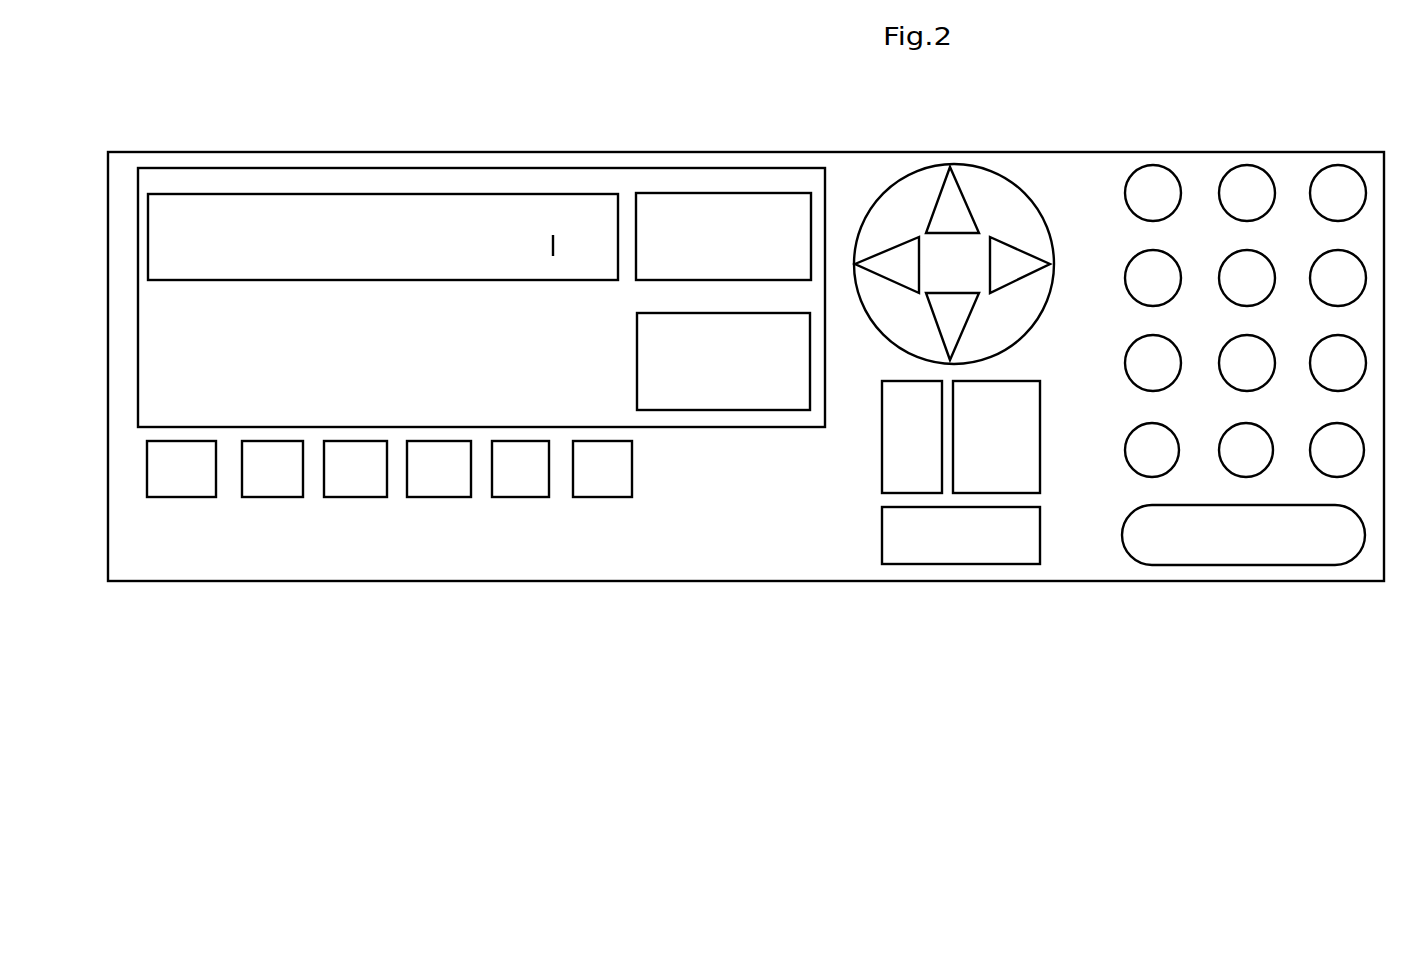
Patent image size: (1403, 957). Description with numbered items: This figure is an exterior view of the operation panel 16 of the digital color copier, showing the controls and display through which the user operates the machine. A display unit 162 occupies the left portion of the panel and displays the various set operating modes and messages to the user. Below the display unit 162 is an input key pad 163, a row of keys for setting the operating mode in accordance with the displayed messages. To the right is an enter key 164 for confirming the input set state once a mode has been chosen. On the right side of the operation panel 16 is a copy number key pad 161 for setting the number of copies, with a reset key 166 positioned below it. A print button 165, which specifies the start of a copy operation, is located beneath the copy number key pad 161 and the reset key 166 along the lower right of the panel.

The operation panel 16 is at (773, 147).
The copy number key pad 161 is at (1343, 315).
The display unit 162 is at (445, 170).
The input key pad 163 is at (404, 520).
The enter key 164 is at (980, 543).
The print button 165 is at (1283, 565).
The reset key 166 is at (1133, 472).